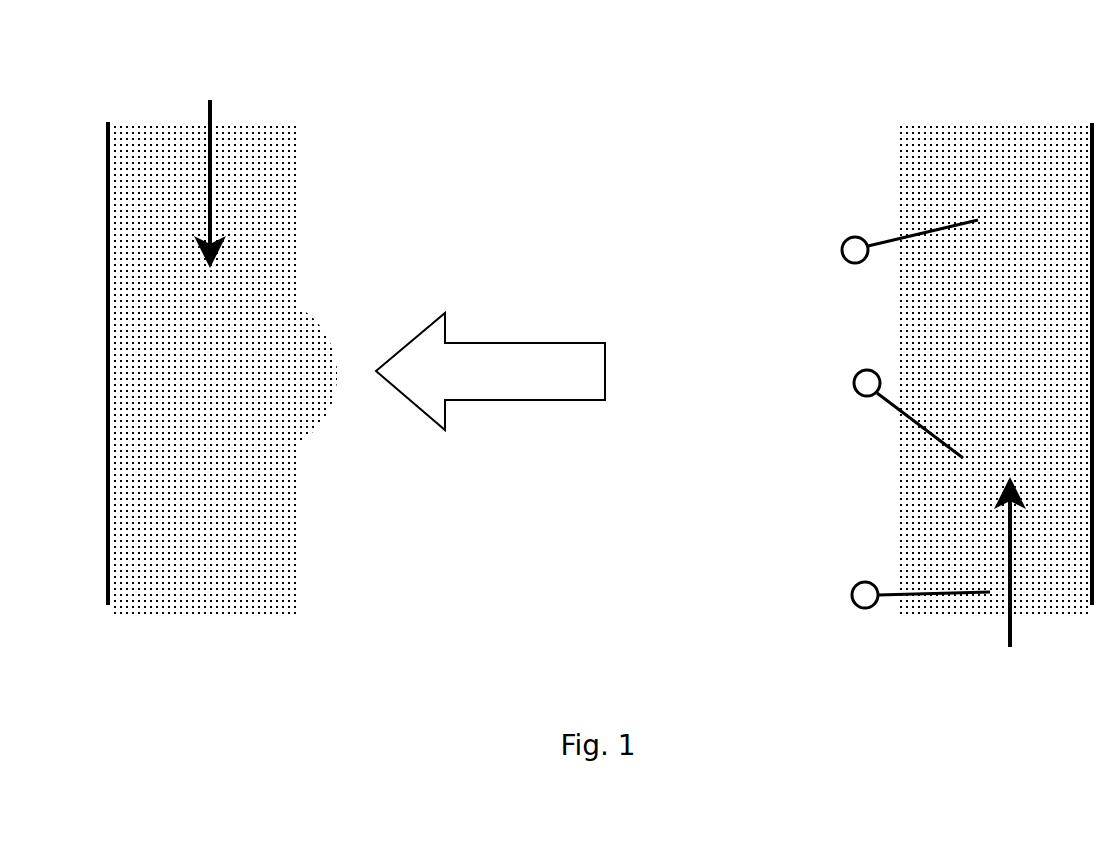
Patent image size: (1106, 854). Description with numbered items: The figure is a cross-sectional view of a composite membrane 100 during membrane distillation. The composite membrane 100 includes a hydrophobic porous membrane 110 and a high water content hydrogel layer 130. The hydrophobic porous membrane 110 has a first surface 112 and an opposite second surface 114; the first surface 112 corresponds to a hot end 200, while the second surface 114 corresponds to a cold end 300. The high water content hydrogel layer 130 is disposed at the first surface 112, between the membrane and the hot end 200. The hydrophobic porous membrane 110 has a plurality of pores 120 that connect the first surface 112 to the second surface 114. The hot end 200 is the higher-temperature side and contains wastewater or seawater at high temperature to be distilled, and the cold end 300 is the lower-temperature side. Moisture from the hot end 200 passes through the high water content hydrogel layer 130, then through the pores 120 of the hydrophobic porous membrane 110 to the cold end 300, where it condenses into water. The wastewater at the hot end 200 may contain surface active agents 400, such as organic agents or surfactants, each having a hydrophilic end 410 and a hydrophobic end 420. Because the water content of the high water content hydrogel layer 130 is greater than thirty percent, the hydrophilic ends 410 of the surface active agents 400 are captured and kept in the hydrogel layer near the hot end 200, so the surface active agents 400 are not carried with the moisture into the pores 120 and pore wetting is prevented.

The composite membrane 100 is at (597, 311).
The hydrophobic porous membrane 110 is at (602, 142).
The first surface 112 is at (698, 233).
The second surface 114 is at (300, 167).
The pores 120 is at (367, 303).
The high water content hydrogel layer 130 is at (797, 336).
The hot end 200 is at (1008, 579).
The cold end 300 is at (211, 170).
The surface active agents 400 is at (918, 306).
The hydrophilic end 410 is at (856, 237).
The hydrophobic end 420 is at (932, 222).